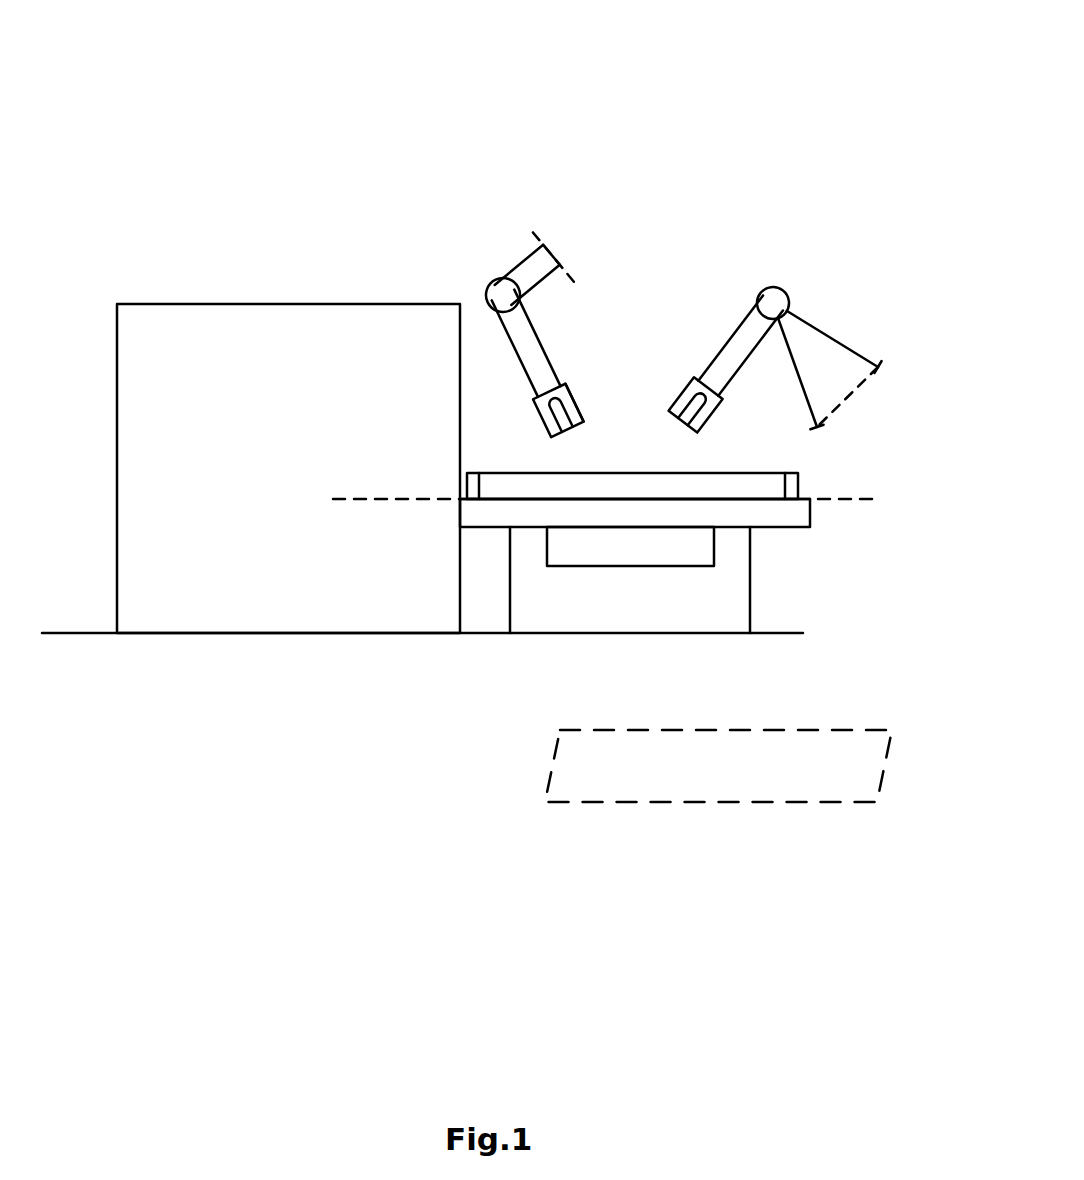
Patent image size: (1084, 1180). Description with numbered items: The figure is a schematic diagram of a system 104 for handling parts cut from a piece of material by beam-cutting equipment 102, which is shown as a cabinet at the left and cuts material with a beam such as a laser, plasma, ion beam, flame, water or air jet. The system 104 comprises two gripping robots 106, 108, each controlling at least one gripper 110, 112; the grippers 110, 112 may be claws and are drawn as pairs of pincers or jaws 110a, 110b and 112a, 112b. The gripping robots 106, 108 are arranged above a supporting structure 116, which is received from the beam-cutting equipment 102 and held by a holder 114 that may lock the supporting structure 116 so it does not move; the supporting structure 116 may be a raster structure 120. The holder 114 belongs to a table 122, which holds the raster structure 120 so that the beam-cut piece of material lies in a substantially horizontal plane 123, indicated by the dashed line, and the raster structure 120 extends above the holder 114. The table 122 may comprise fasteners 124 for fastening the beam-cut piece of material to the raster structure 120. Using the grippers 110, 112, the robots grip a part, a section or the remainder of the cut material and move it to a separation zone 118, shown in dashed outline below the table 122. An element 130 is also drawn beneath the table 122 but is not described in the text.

The beam-cutting equipment 102 is at (200, 333).
The system 104 is at (679, 132).
The gripping robot 106 is at (795, 328).
The gripping robot 108 is at (528, 268).
The gripper 110 is at (686, 380).
The pincer / jaw 110a is at (672, 407).
The pincer / jaw 110b is at (712, 408).
The gripper 112 is at (574, 388).
The pincer / jaw 112a is at (533, 415).
The pincer / jaw 112b is at (583, 422).
The holder 114 is at (770, 517).
The supporting structure 116 is at (532, 522).
The separation zone 118 is at (648, 770).
The raster structure 120 is at (502, 490).
The table 122 is at (758, 600).
The substantially horizontal plane 123 is at (340, 497).
The fasteners 124 is at (472, 490).
The drive unit 130 is at (577, 547).